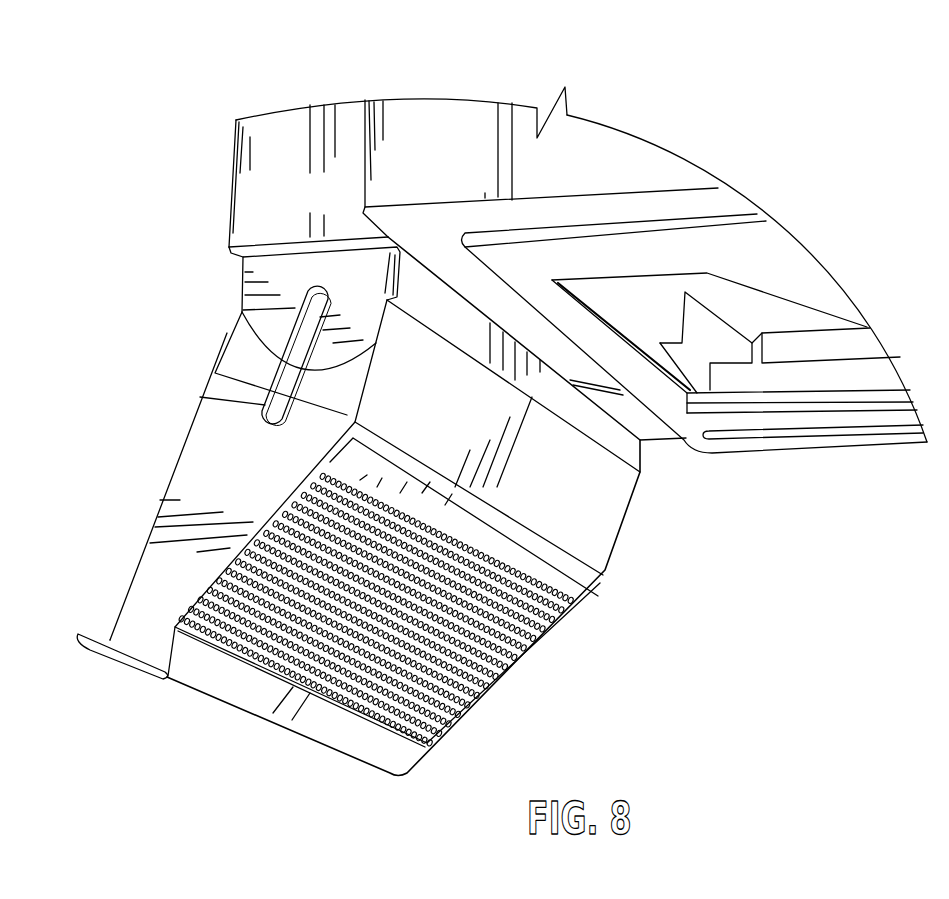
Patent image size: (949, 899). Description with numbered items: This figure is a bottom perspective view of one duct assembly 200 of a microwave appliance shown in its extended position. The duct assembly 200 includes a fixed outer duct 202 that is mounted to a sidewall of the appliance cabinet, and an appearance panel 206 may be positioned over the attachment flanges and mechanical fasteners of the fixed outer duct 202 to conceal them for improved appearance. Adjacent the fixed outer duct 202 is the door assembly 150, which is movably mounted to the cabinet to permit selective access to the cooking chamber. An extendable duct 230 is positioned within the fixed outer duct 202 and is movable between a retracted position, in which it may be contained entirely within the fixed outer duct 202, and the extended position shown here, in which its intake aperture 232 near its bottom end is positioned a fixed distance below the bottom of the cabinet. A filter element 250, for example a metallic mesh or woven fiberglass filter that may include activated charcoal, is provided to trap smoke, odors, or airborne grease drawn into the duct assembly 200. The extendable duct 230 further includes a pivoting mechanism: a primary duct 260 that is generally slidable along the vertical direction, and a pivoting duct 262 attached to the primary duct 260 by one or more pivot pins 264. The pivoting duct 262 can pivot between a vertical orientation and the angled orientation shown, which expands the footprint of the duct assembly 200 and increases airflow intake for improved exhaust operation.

The door assembly 150 is at (600, 151).
The duct assembly 200 is at (204, 163).
The fixed outer duct 202 is at (291, 120).
The appearance panel 206 is at (317, 208).
The extendable duct 230 is at (643, 605).
The intake aperture 232 is at (260, 664).
The filter element 250 is at (427, 673).
The primary duct 260 is at (267, 273).
The pivoting duct 262 is at (195, 480).
The pivot pin 264 is at (268, 411).